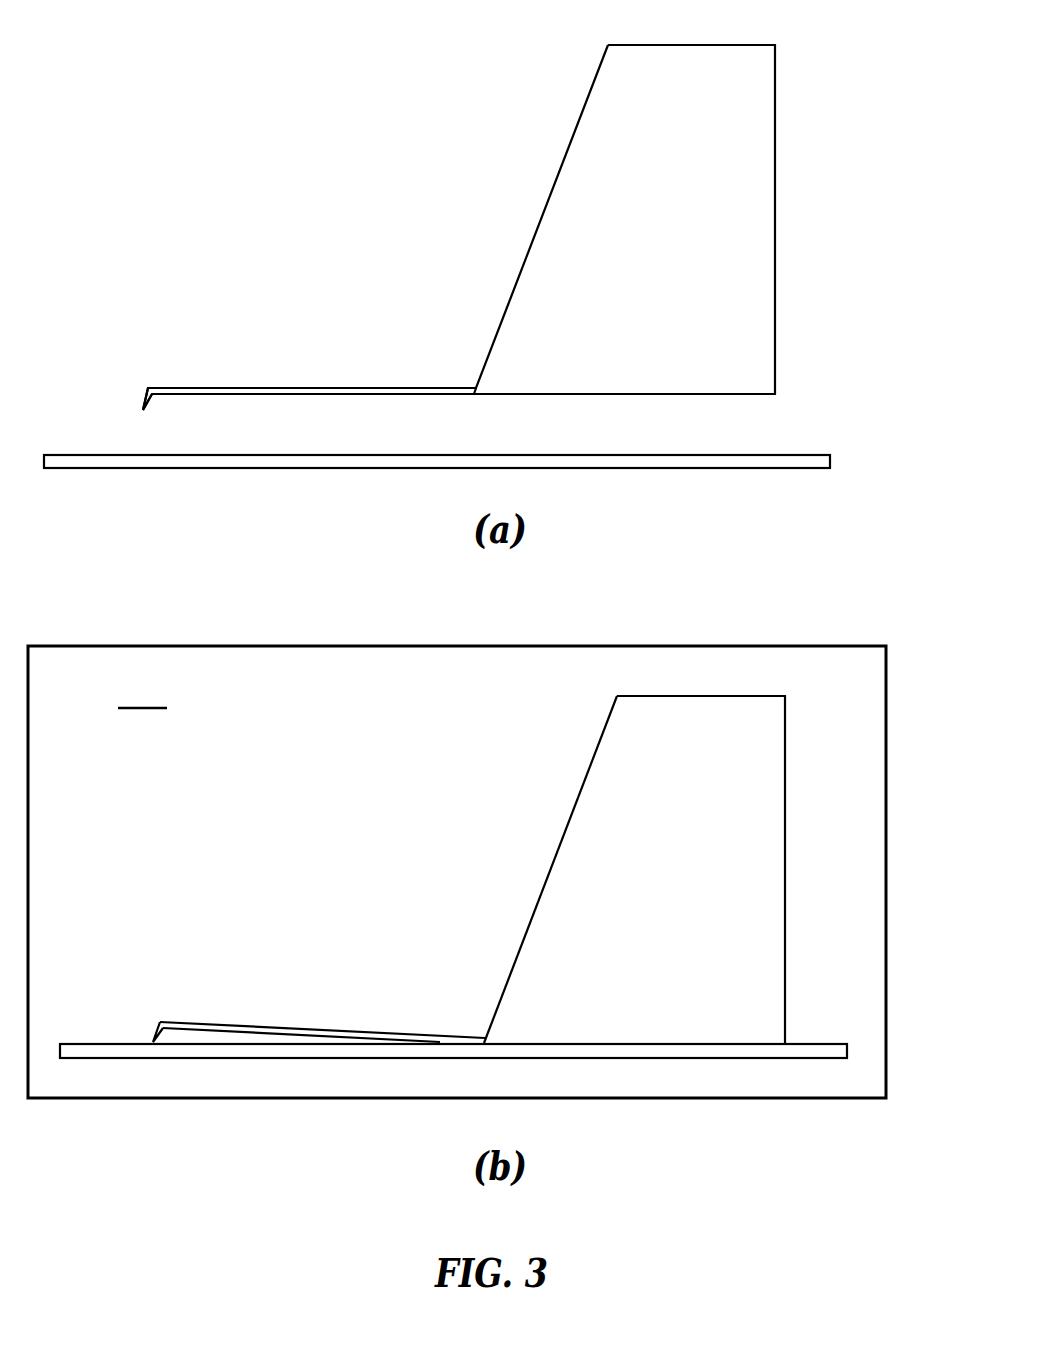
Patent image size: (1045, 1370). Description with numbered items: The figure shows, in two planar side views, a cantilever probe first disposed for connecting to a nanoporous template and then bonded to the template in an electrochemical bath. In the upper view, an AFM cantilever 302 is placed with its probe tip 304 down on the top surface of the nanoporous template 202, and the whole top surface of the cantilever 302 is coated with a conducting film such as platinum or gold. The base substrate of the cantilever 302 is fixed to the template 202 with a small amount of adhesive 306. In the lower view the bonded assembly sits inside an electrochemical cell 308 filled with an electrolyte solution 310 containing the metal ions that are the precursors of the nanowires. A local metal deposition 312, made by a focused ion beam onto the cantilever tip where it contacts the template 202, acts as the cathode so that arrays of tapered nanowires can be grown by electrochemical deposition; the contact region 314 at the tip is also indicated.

The AFM cantilever 302 is at (430, 280).
The probe tip 304 is at (143, 410).
The adhesive 306 is at (575, 394).
The nanoporous template 202 is at (785, 453).
The electrochemical cell 308 is at (238, 646).
The electrolyte solution 310 is at (142, 692).
The local metal deposition 312 is at (150, 1042).
The contact point 314 is at (126, 1042).